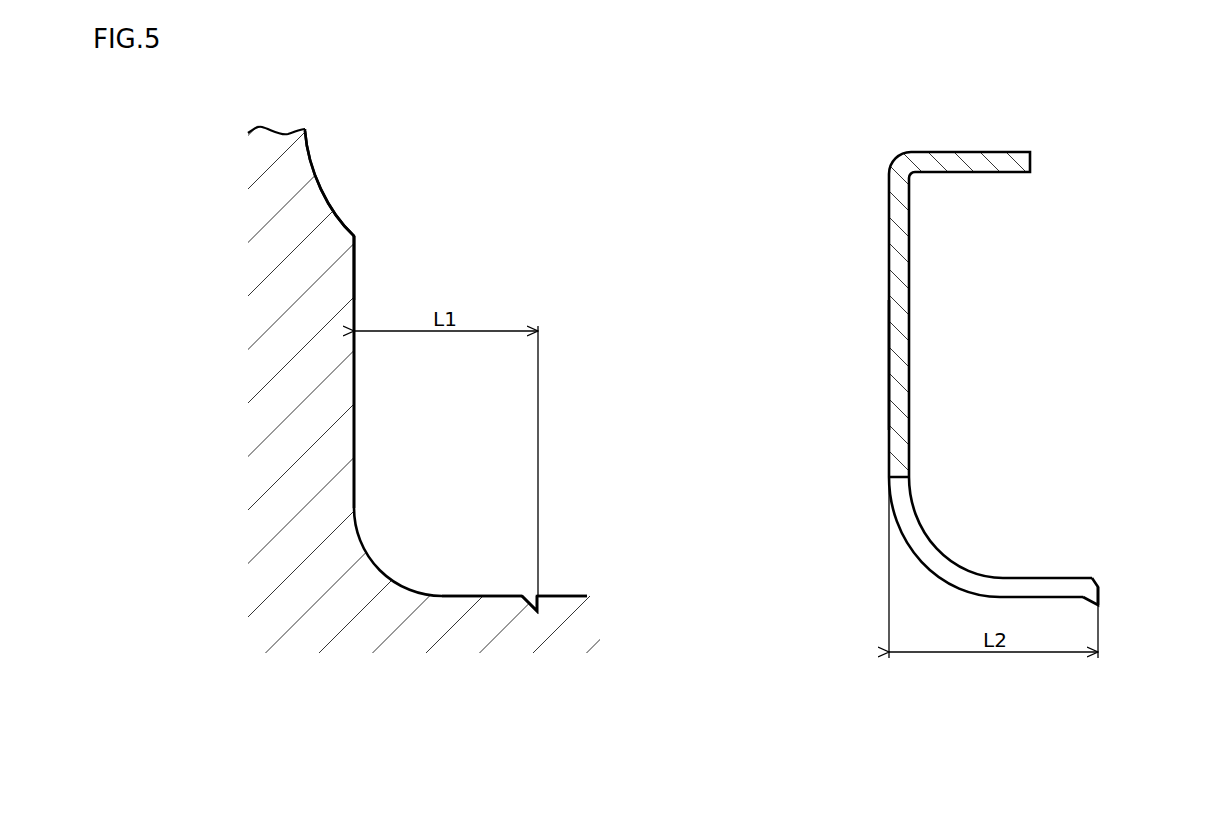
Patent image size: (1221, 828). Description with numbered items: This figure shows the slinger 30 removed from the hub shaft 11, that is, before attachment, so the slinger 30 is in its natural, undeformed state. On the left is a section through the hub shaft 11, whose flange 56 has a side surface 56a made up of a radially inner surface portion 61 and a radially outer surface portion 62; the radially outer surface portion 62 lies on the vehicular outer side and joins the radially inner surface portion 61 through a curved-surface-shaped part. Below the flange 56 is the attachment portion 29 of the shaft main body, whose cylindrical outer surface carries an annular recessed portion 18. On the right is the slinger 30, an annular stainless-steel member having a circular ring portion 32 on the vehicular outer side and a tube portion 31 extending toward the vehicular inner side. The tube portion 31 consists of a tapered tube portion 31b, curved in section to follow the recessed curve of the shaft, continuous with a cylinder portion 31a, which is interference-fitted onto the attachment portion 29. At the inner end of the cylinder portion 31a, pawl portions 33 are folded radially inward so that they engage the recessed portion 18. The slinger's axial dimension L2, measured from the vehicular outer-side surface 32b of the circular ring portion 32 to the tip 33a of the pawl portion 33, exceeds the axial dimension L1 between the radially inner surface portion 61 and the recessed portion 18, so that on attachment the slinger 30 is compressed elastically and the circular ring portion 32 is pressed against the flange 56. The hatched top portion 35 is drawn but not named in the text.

The hub shaft 11 is at (263, 630).
The recessed portion 18 is at (532, 596).
The attachment portion 29 is at (522, 632).
The slinger 30 is at (889, 342).
The tube portion 31 is at (990, 522).
The cylinder portion 31a is at (1046, 544).
The tapered tube portion 31b is at (967, 576).
The circular ring portion 32 is at (897, 316).
The vehicular outer-side surface 32b is at (889, 362).
The pawl portion 33 is at (1098, 587).
The tip 33a is at (1100, 596).
The flange portion 35 is at (976, 160).
The flange 56 is at (313, 362).
The side surface 56a is at (354, 278).
The radially inner surface portion 61 is at (354, 390).
The radially outer surface portion 62 is at (313, 168).